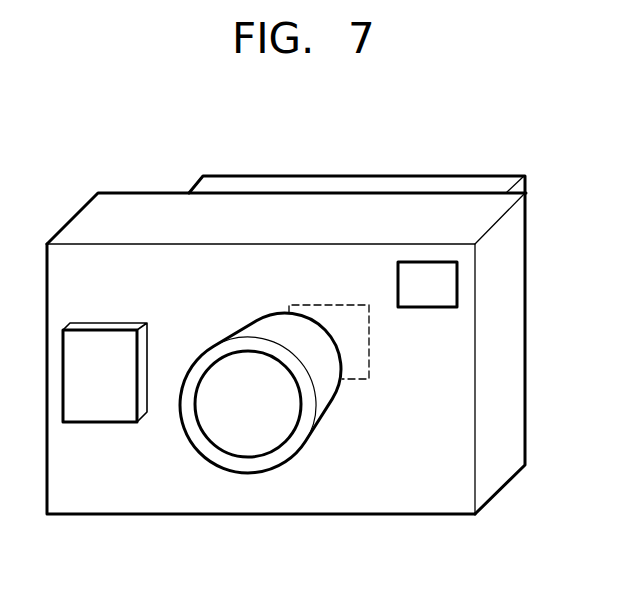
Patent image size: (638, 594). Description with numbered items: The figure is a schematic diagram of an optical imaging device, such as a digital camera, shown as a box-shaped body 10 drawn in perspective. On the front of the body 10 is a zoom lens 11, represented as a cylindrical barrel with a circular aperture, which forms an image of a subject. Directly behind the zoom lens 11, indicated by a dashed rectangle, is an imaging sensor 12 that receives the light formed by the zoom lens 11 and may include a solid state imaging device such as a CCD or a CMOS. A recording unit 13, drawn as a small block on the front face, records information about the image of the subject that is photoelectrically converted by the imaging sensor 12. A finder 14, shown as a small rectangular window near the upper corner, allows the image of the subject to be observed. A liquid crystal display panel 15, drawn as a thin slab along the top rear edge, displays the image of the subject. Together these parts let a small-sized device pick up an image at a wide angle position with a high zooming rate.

The camera body 10 is at (433, 498).
The zoom lens 11 is at (246, 448).
The imaging sensor 12 is at (353, 381).
The recording unit 13 is at (109, 413).
The finder 14 is at (452, 285).
The liquid crystal display panel 15 is at (413, 180).